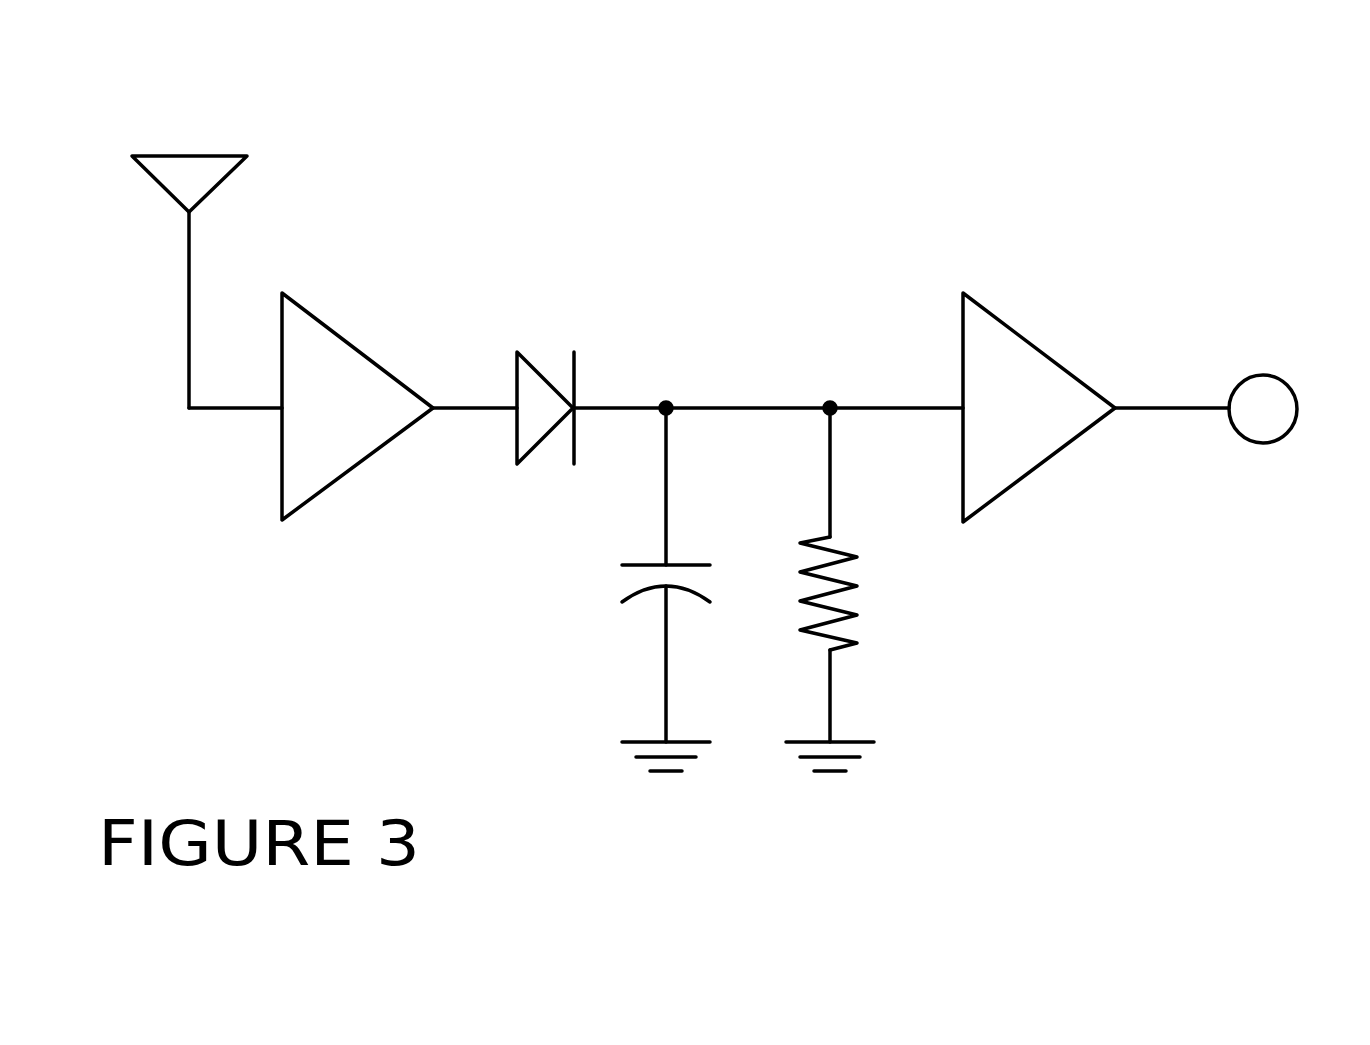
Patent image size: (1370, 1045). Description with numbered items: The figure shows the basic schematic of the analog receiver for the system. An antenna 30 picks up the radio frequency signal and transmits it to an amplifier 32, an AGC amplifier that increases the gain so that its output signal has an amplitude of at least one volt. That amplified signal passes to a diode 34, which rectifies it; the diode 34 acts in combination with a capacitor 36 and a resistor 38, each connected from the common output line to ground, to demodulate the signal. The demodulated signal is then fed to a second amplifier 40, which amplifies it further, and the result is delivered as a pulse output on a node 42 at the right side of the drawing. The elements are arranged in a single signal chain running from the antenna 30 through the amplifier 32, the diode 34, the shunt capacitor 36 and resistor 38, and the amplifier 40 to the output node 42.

The antenna 30 is at (217, 215).
The amplifier 32 is at (371, 363).
The diode 34 is at (587, 346).
The capacitor 36 is at (585, 589).
The resistor 38 is at (902, 589).
The amplifier 40 is at (964, 383).
The node 42 is at (1222, 387).